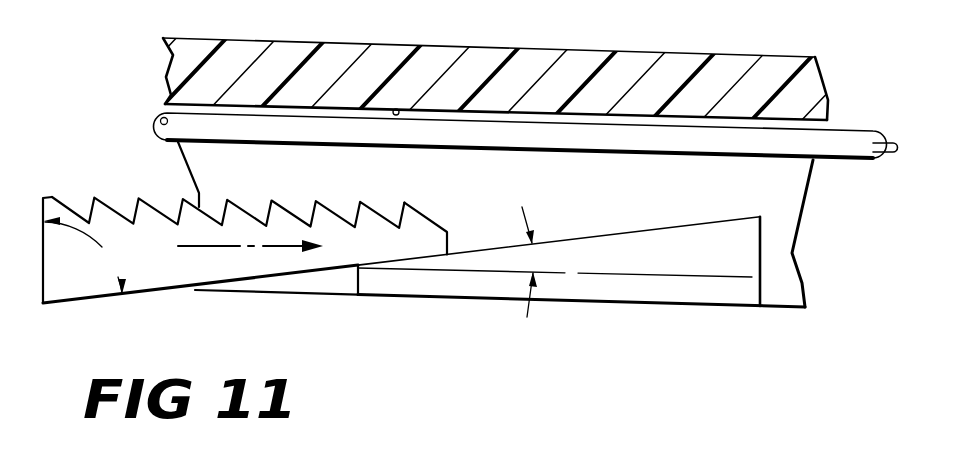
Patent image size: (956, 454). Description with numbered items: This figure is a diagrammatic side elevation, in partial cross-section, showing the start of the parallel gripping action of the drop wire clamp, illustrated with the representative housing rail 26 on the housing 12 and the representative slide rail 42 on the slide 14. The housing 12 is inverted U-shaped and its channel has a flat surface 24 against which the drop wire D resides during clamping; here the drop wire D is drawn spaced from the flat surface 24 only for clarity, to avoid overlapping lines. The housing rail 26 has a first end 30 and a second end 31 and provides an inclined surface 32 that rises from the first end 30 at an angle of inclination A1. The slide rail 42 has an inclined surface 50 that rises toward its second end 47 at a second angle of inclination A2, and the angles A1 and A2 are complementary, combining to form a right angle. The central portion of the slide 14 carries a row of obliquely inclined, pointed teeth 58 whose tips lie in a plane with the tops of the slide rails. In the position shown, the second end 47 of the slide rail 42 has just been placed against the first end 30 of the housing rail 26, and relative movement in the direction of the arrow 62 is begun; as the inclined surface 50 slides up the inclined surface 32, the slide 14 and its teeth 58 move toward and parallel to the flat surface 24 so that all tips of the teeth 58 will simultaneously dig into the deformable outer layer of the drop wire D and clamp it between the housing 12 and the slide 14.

The housing 12 is at (292, 40).
The flat surface 24 is at (404, 108).
The drop wire D is at (163, 122).
The teeth 58 is at (163, 210).
The slide 14 is at (138, 297).
The slide rail 42 is at (56, 283).
The second end of slide rail 47 is at (448, 241).
The arrow 62 is at (283, 248).
The inclined surface of housing rail 32 is at (648, 230).
The inclined surface of slide rail 50 is at (225, 284).
The first end of housing rail 30 is at (356, 283).
The housing rail 26 is at (595, 304).
The second end of housing rail 31 is at (762, 284).
The second angle of inclination A2 is at (86, 255).
The angle of inclination A1 is at (537, 262).